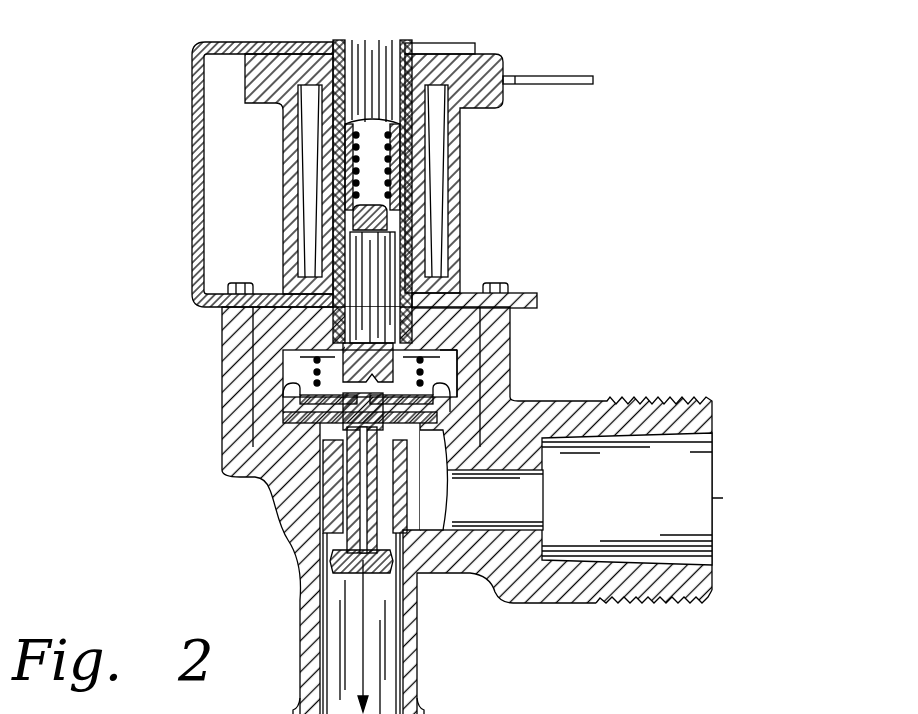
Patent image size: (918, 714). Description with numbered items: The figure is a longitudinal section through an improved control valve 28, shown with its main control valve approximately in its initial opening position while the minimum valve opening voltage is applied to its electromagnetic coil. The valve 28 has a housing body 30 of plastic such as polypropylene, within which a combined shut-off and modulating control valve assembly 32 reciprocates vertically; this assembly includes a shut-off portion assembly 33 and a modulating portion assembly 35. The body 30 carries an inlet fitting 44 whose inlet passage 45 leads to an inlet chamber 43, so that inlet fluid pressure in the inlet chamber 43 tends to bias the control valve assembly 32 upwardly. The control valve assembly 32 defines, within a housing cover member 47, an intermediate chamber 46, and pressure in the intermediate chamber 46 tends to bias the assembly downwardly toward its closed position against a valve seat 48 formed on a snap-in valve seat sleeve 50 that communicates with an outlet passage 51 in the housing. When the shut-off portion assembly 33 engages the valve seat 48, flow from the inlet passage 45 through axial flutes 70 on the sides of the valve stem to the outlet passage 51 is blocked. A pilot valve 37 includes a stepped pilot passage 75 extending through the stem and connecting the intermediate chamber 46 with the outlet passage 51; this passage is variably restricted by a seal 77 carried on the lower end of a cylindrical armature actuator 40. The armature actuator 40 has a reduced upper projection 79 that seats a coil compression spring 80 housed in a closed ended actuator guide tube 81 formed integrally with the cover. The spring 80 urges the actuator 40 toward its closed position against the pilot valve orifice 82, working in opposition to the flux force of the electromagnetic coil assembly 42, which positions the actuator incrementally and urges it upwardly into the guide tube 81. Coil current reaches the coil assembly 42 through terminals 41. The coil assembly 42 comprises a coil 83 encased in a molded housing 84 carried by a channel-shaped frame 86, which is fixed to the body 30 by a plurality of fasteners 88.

The valve 28 is at (518, 196).
The housing body 30 is at (260, 479).
The combined shut-off and modulating control valve assembly 32 is at (300, 435).
The shut-off portion assembly 33 is at (470, 428).
The modulating portion assembly 35 is at (340, 580).
The pilot valve 37 is at (335, 377).
The armature actuator 40 is at (380, 246).
The terminals 41 is at (572, 78).
The electromagnetic coil assembly 42 is at (470, 136).
The inlet chamber 43 is at (437, 567).
The inlet fitting 44 is at (660, 605).
The inlet passage 45 is at (445, 527).
The intermediate chamber 46 is at (295, 363).
The housing cover member 47 is at (460, 320).
The valve seat 48 is at (325, 496).
The snap-in valve seat sleeve 50 is at (470, 567).
The outlet passage 51 is at (393, 670).
The axial flutes 70 is at (338, 520).
The stepped pilot passage 75 is at (335, 556).
The seal 77 is at (463, 341).
The reduced upper projection 79 is at (370, 204).
The coil compression spring 80 is at (412, 158).
The closed ended actuator guide tube 81 is at (379, 118).
The pilot valve orifice 82 is at (447, 383).
The coil 83 is at (298, 210).
The molded housing 84 is at (282, 135).
The channel-shaped frame 86 is at (192, 62).
The fasteners 88 is at (238, 282).